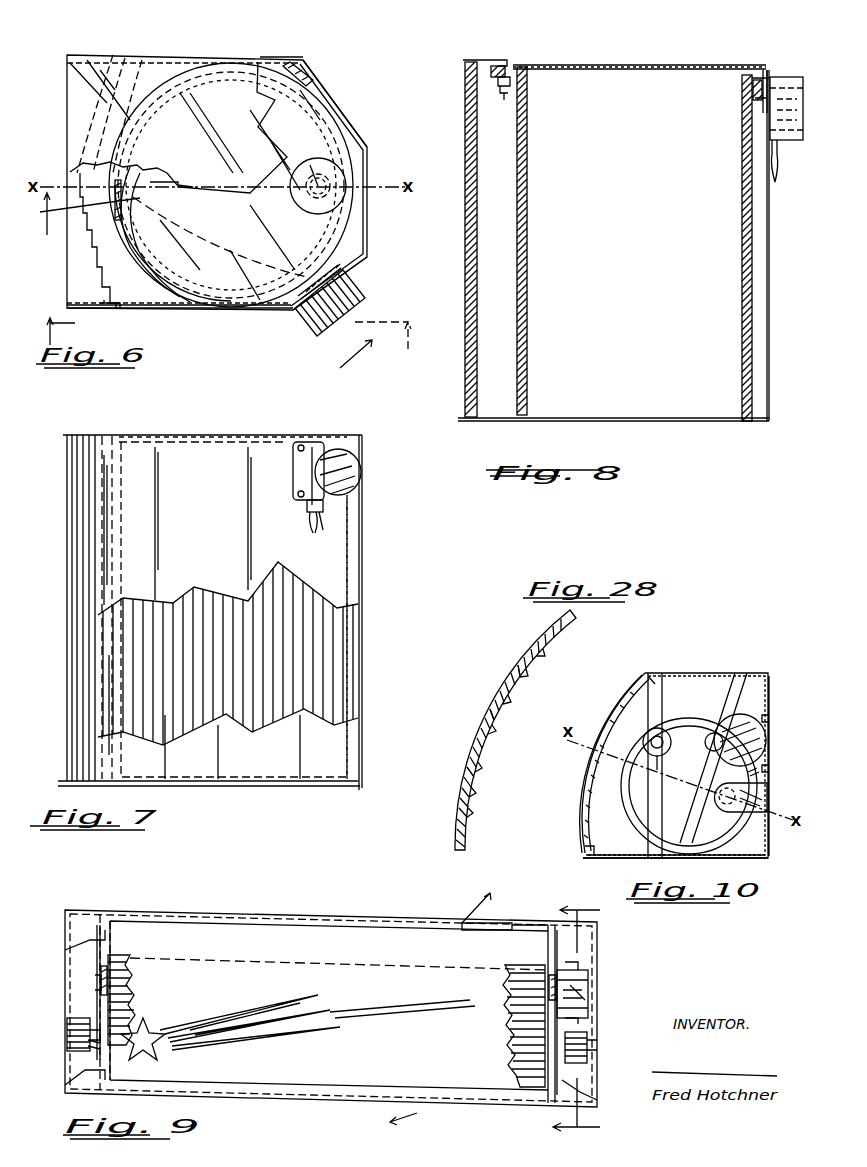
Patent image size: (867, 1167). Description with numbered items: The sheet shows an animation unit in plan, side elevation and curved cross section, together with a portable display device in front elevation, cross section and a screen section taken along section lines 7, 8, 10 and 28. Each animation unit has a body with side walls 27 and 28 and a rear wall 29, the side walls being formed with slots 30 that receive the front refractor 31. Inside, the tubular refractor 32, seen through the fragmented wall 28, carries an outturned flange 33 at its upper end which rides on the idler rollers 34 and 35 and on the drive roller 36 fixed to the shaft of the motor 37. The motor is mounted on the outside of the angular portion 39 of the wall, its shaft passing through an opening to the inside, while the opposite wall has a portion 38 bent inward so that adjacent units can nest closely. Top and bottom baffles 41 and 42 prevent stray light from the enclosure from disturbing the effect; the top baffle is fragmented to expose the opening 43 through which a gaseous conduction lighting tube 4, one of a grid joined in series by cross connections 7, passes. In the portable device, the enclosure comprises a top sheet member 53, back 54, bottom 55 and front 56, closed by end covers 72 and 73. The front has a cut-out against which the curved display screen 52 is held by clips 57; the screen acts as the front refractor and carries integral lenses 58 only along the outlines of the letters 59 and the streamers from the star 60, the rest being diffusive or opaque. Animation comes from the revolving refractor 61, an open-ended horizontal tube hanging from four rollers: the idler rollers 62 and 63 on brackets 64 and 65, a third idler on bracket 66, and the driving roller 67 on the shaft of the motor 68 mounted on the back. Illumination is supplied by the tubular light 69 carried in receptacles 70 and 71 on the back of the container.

In FIG. 6, the gaseous conduction lighting tube 4 is at (314, 172).
In FIG. 6, the cross connections 7 is at (222, 336).
In FIG. 6, the section line 8- 8 is at (206, 283).
In FIG. 9, the section line 10- 10 is at (587, 1020).
In FIG. 6, the side wall 27 is at (280, 57).
In FIG. 6, the side wall 28 is at (224, 312).
In FIG. 7, the side wall 28 is at (207, 447).
In FIG. 9, the side wall 28 is at (445, 1000).
In FIG. 6, the rear wall 29 is at (367, 230).
In FIG. 7, the rear wall 29 is at (360, 640).
In FIG. 6, the slots 30 is at (120, 58).
In FIG. 7, the slots 30 is at (102, 592).
In FIG. 6, the front refractor 31 is at (90, 265).
In FIG. 8, the front refractor 31 is at (477, 215).
In FIG. 7, the front refractor 31 is at (83, 664).
In FIG. 6, the tubular refractor 32 is at (257, 302).
In FIG. 8, the tubular refractor 32 is at (528, 258).
In FIG. 7, the tubular refractor 32 is at (323, 676).
In FIG. 6, the outturned flange 33 is at (340, 247).
In FIG. 8, the outturned flange 33 is at (506, 72).
In FIG. 7, the outturned flange 33 is at (245, 440).
In FIG. 6, the idler roller 34 is at (110, 182).
In FIG. 8, the idler roller 34 is at (511, 86).
In FIG. 6, the idler roller 35 is at (306, 74).
In FIG. 6, the drive roller 36 is at (342, 272).
In FIG. 8, the drive roller 36 is at (750, 99).
In FIG. 6, the motor 37 is at (362, 300).
In FIG. 8, the motor 37 is at (792, 142).
In FIG. 7, the motor 37 is at (355, 480).
In FIG. 6, the inwardly bent wall portion 38 is at (339, 110).
In FIG. 6, the angular portion 39 is at (298, 314).
In FIG. 8, the angular portion 39 is at (769, 369).
In FIG. 7, the angular portion 39 is at (350, 555).
In FIG. 6, the top baffle 41 is at (167, 87).
In FIG. 8, the top baffle 41 is at (679, 65).
In FIG. 7, the top baffle 41 is at (163, 435).
In FIG. 6, the bottom baffle 42 is at (177, 300).
In FIG. 8, the bottom baffle 42 is at (622, 418).
In FIG. 7, the bottom baffle 42 is at (254, 784).
In FIG. 6, the opening 43 is at (304, 207).
In FIG. 28, the display screen 52 is at (527, 650).
In FIG. 10, the display screen 52 is at (587, 791).
In FIG. 9, the display screen 52 is at (224, 1068).
In FIG. 10, the top sheet member 53 is at (740, 673).
In FIG. 9, the top sheet member 53 is at (522, 923).
In FIG. 10, the back 54 is at (769, 697).
In FIG. 10, the bottom 55 is at (630, 858).
In FIG. 10, the front 56 is at (585, 828).
In FIG. 9, the front 56 is at (85, 925).
In FIG. 10, the clips 57 is at (647, 676).
In FIG. 9, the clips 57 is at (537, 928).
In FIG. 28, the integral lenses 58 is at (512, 694).
In FIG. 28, the letters 59 is at (503, 681).
In FIG. 9, the letters 59 is at (223, 957).
In FIG. 28, the star 60 is at (478, 735).
In FIG. 9, the star 60 is at (230, 1030).
In FIG. 10, the revolving refractor 61 is at (631, 812).
In FIG. 9, the revolving refractor 61 is at (518, 970).
In FIG. 10, the roller 62 is at (652, 739).
In FIG. 9, the roller 62 is at (557, 988).
In FIG. 9, the roller 63 is at (100, 977).
In FIG. 10, the bracket 64 is at (660, 762).
In FIG. 9, the bracket 64 is at (560, 950).
In FIG. 9, the bracket 65 is at (97, 1002).
In FIG. 10, the bracket 66 is at (693, 827).
In FIG. 10, the roller 67 is at (712, 733).
In FIG. 10, the motor 68 is at (757, 733).
In FIG. 9, the motor 68 is at (578, 993).
In FIG. 9, the tubular light 69 is at (90, 1048).
In FIG. 10, the receptacle 70 is at (758, 798).
In FIG. 9, the receptacle 70 is at (585, 1045).
In FIG. 9, the receptacle 71 is at (77, 1031).
In FIG. 9, the end cover 72 is at (597, 995).
In FIG. 9, the end cover 73 is at (63, 956).